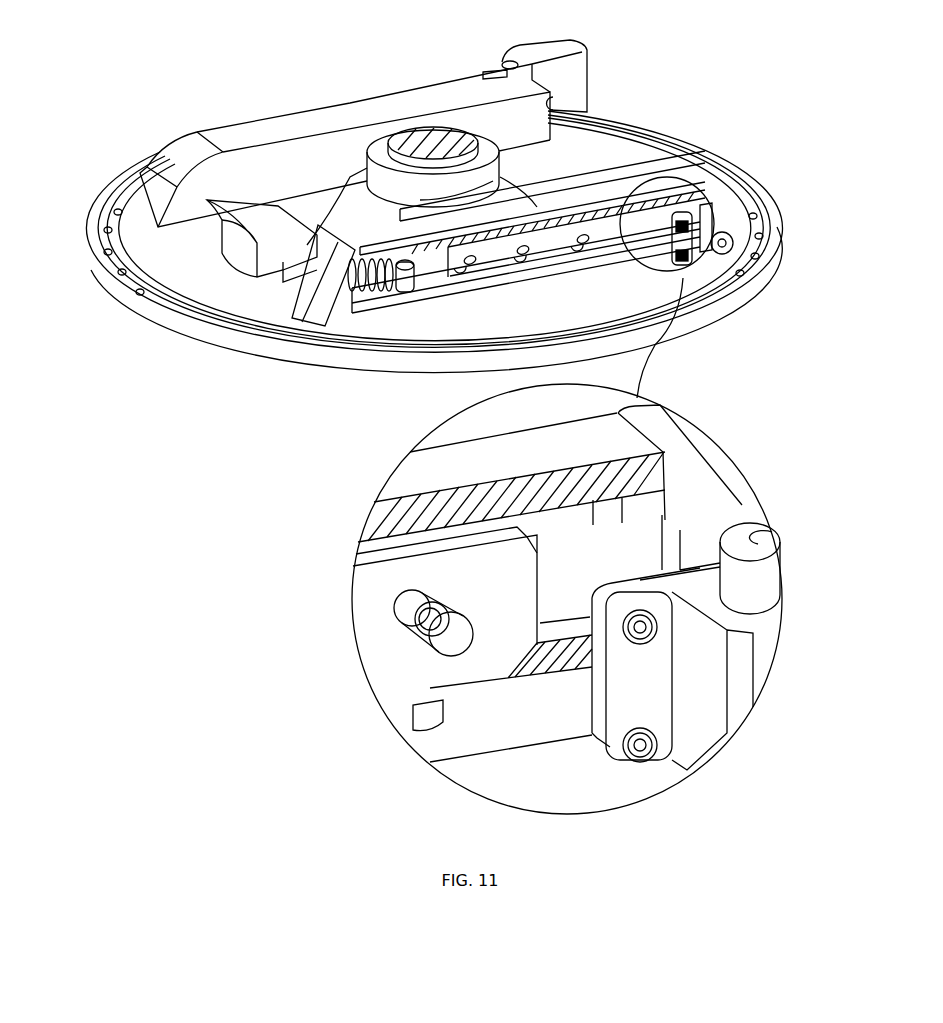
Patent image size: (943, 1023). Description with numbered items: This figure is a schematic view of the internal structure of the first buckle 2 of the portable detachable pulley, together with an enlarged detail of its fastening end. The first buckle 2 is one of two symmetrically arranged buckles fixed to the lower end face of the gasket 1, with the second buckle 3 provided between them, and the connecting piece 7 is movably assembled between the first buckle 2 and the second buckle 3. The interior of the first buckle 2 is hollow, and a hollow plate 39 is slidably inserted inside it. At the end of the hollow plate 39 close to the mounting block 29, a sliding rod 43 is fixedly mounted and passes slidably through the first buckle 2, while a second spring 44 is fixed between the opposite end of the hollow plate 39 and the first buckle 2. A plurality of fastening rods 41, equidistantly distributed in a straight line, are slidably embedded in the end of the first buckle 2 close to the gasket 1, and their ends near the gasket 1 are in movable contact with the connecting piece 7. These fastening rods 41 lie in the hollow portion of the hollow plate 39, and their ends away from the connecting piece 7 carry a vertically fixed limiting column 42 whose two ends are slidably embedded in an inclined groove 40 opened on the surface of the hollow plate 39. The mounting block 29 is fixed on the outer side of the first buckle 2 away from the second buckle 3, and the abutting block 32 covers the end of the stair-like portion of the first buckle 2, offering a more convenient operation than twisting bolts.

The gasket 1 is at (165, 242).
The first buckle 2 is at (333, 118).
The second buckle 3 is at (243, 238).
The connecting piece 7 is at (618, 140).
The mounting block 29 is at (693, 677).
The abutting block 32 is at (693, 458).
The hollow plate 39 is at (398, 583).
The inclined groove 40 is at (463, 650).
The fastening rod 41 is at (418, 707).
The limiting column 42 is at (413, 618).
The sliding rod 43 is at (748, 523).
The second spring 44 is at (320, 330).